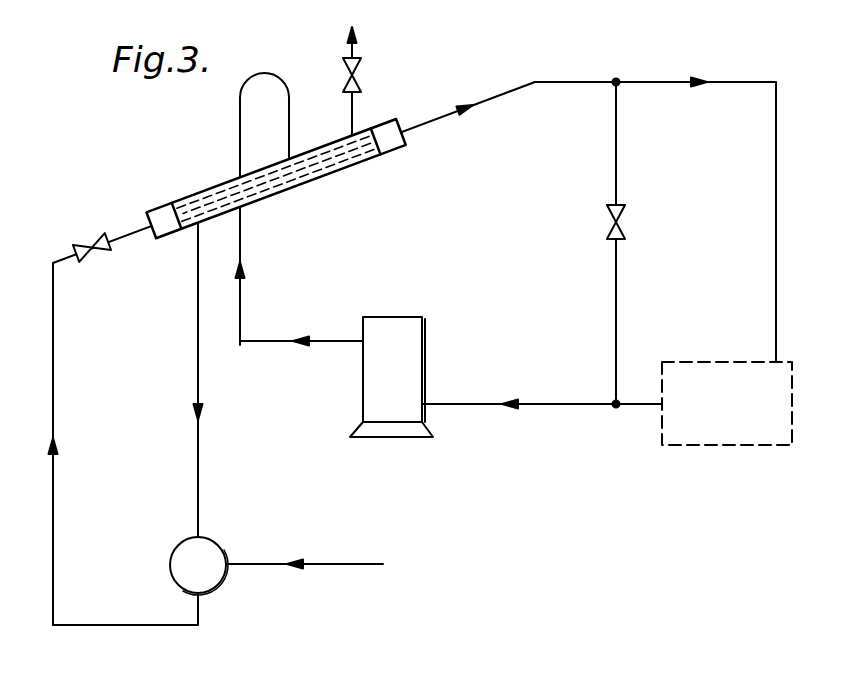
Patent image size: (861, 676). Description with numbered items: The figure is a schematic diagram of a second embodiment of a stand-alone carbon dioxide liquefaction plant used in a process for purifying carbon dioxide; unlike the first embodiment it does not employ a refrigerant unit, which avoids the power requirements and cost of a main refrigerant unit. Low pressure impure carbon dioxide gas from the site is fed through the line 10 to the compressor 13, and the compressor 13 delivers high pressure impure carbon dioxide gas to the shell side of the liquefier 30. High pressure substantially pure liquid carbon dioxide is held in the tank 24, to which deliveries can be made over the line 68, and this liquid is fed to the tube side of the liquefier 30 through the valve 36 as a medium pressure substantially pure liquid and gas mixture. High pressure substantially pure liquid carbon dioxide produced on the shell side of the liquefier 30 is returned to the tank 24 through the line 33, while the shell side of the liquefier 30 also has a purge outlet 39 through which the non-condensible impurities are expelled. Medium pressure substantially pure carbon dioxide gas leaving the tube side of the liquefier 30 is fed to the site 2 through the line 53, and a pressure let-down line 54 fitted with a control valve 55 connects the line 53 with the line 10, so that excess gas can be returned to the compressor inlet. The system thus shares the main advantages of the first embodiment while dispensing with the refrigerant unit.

The site 2 is at (722, 361).
The line 10 is at (565, 408).
The compressor 13 is at (424, 358).
The tank 24 is at (218, 548).
The liquefier 30 is at (350, 167).
The line 33 is at (202, 457).
The valve 36 is at (78, 246).
The purge outlet 39 is at (354, 106).
The line 53 is at (642, 80).
The pressure let-down line 54 is at (617, 170).
The control valve 55 is at (620, 223).
The line 68 is at (335, 562).